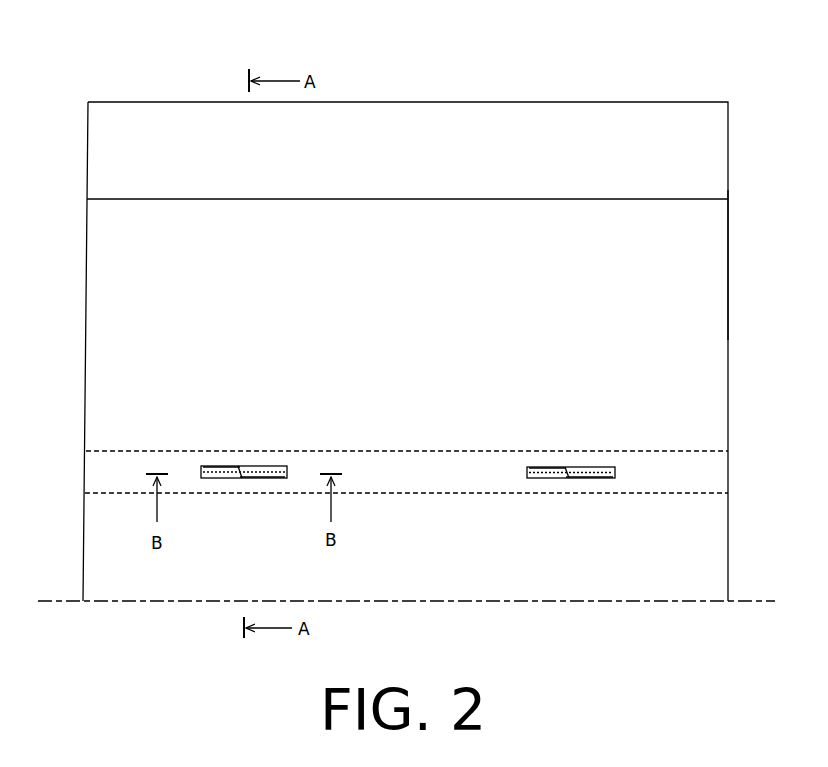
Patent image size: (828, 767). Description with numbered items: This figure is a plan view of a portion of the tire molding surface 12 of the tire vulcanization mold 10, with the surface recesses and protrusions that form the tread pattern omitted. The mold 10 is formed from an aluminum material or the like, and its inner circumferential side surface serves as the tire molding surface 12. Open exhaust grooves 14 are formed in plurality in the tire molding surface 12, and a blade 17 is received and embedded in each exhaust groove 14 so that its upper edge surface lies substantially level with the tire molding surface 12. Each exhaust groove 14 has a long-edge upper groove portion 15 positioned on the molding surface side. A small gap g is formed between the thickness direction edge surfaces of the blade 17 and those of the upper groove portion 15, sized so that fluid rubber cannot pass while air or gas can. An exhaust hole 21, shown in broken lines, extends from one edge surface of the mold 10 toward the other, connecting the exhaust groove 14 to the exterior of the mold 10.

The tire vulcanization mold 10 is at (80, 296).
The tire molding surface 12 is at (712, 330).
The exhaust groove 14 is at (258, 466).
The upper groove portion 15 is at (218, 473).
The blade 17 is at (250, 480).
The small gap g is at (240, 466).
The exhaust hole 21 is at (374, 456).